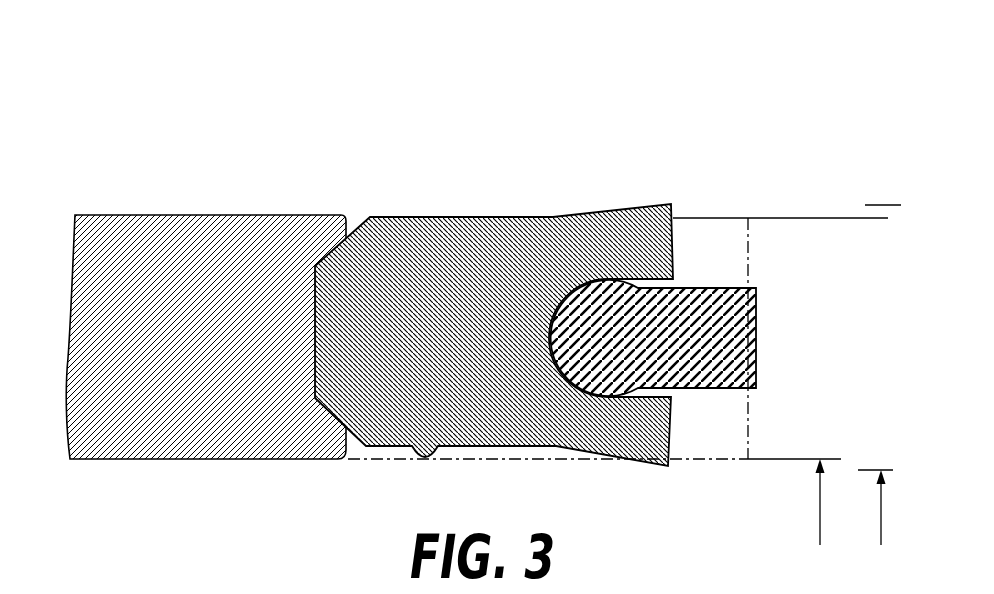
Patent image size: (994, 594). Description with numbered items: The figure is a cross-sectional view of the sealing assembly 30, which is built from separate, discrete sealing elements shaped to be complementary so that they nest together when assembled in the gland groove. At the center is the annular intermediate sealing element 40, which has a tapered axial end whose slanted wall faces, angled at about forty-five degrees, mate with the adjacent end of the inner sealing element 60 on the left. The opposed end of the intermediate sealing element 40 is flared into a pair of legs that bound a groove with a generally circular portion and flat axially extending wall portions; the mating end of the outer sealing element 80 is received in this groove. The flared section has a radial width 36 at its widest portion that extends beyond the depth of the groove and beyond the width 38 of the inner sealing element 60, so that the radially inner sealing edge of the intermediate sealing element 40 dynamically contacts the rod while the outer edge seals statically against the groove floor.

The sealing assembly 30 is at (578, 251).
The intermediate sealing element 40 is at (470, 200).
The inner sealing element 60 is at (163, 200).
The outer sealing element 80 is at (762, 330).
The width of the sealing element 38 is at (812, 493).
The radial width 36 is at (873, 505).